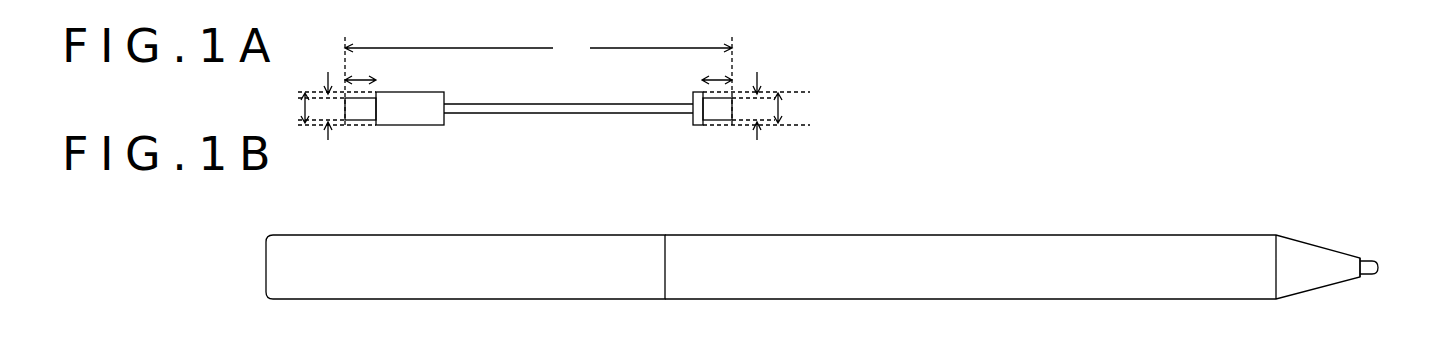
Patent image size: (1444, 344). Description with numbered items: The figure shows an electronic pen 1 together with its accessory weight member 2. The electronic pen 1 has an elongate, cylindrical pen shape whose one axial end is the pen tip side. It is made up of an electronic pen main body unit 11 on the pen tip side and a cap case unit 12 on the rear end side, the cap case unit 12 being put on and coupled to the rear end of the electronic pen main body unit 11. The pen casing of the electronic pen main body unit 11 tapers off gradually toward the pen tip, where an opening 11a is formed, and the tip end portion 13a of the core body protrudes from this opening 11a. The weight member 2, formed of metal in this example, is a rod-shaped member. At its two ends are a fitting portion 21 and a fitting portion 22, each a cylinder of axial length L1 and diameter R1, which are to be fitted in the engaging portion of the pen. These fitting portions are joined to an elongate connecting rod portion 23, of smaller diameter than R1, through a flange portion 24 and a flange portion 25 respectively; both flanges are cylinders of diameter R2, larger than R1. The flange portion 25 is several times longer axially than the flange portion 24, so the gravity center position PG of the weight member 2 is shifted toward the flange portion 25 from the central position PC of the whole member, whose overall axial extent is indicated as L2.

In FIG. 1B, the electronic pen 1 is at (889, 217).
In FIG. 1B, the electronic pen main body unit 11 is at (932, 302).
In FIG. 1B, the opening 11a is at (1361, 279).
In FIG. 1B, the cap case unit 12 is at (515, 302).
In FIG. 1B, the tip end portion 13a is at (1362, 260).
In FIG. 1A, the weight member 2 is at (561, 122).
In FIG. 1A, the fitting portion 21 is at (718, 121).
In FIG. 1A, the fitting portion 22 is at (365, 122).
In FIG. 1A, the connecting rod portion 23 is at (584, 104).
In FIG. 1A, the flange portion 24 is at (698, 126).
In FIG. 1A, the flange portion 25 is at (418, 126).
In FIG. 1A, the central position PC is at (524, 96).
In FIG. 1A, the gravity center position PG is at (479, 122).
In FIG. 1A, the length L1 is at (360, 79).
In FIG. 1A, the overall length L2 is at (538, 81).
In FIG. 1A, the diameter R1 is at (332, 108).
In FIG. 1A, the diameter R2 is at (304, 108).